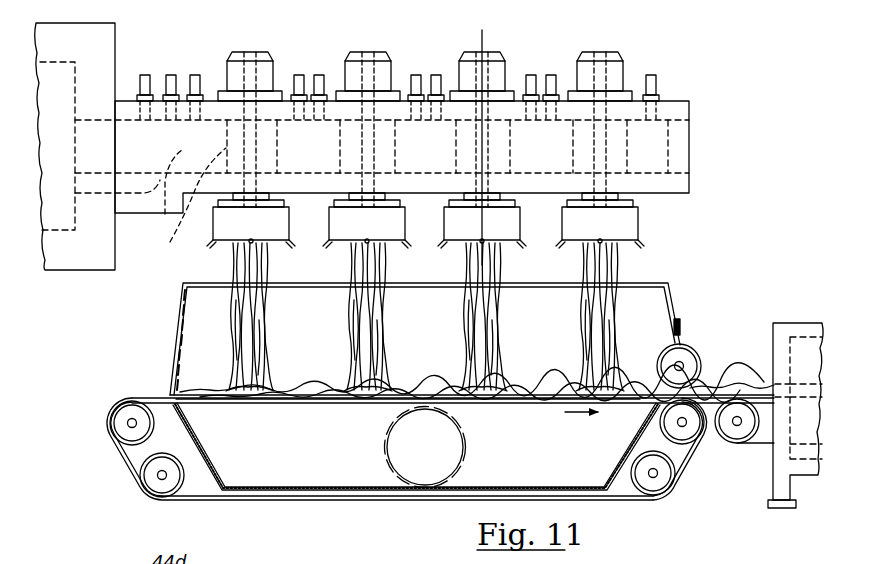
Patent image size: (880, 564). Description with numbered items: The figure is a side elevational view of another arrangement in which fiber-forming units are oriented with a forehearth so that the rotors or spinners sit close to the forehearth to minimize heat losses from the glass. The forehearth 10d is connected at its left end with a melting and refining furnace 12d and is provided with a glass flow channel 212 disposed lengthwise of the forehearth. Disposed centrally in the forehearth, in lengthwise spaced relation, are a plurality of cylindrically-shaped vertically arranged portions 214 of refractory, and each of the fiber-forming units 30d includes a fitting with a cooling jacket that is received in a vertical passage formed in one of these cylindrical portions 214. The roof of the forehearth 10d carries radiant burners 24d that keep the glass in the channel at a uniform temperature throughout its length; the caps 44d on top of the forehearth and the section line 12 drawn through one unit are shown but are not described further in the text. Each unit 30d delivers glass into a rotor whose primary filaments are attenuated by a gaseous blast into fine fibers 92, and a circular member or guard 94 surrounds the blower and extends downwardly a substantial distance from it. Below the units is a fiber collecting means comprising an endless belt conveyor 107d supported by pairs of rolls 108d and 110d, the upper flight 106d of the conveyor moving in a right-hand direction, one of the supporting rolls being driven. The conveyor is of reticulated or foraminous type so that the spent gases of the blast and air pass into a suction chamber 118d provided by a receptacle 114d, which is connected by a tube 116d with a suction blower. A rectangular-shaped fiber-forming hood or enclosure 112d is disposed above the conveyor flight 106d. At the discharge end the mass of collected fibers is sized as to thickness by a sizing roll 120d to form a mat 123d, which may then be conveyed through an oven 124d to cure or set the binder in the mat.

The forehearth 10d is at (692, 109).
The melting and refining furnace 12d is at (116, 45).
The radiant burners 24d is at (193, 76).
The caps / feed connectors 44d is at (229, 58).
The cylindrically-shaped vertically arranged portions of refractory 214 is at (340, 142).
The glass flow channel 212 is at (166, 220).
The fiber-forming units 30d is at (211, 228).
The circular member or guard 94 is at (259, 231).
The section line 12- 12 is at (482, 35).
The fibers 92 is at (229, 328).
The fiber-forming hood or enclosure 112d is at (676, 281).
The upper flight of the conveyor 106d is at (183, 393).
The mat 123d is at (758, 353).
The suction chamber 118d is at (351, 440).
The endless belt conveyor 107d is at (221, 503).
The rolls 108d is at (136, 445).
The tube 116d is at (391, 479).
The receptacle 114d is at (548, 489).
The rolls 110d is at (678, 446).
The sizing roll 120d is at (690, 347).
The oven 124d is at (806, 321).